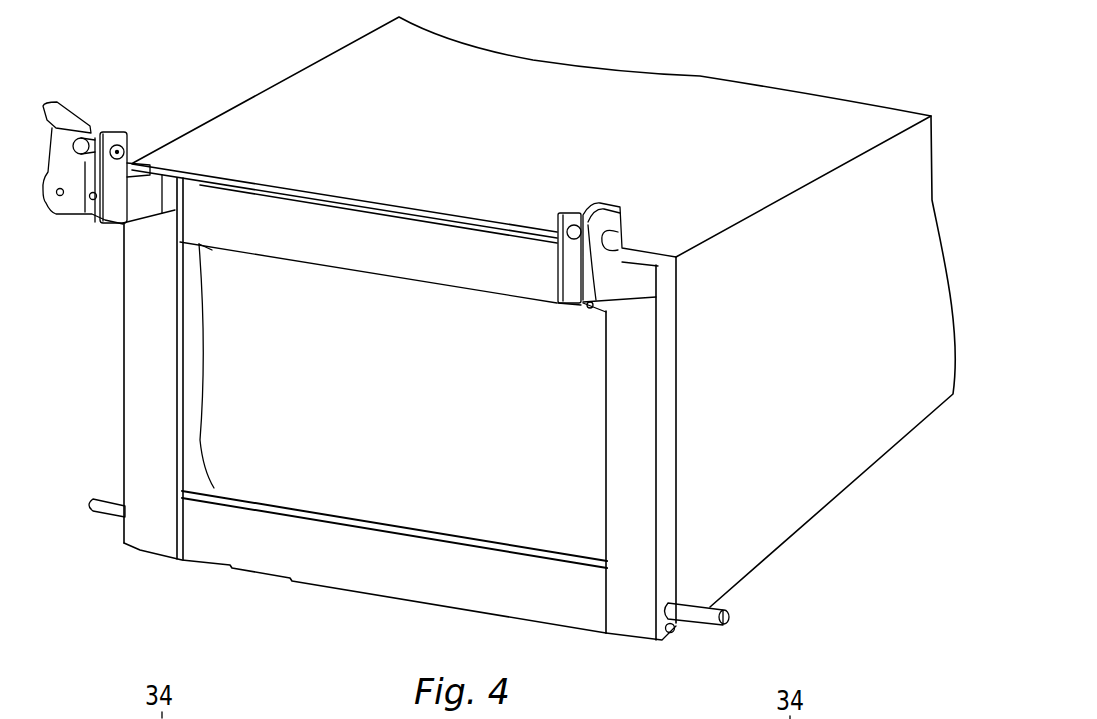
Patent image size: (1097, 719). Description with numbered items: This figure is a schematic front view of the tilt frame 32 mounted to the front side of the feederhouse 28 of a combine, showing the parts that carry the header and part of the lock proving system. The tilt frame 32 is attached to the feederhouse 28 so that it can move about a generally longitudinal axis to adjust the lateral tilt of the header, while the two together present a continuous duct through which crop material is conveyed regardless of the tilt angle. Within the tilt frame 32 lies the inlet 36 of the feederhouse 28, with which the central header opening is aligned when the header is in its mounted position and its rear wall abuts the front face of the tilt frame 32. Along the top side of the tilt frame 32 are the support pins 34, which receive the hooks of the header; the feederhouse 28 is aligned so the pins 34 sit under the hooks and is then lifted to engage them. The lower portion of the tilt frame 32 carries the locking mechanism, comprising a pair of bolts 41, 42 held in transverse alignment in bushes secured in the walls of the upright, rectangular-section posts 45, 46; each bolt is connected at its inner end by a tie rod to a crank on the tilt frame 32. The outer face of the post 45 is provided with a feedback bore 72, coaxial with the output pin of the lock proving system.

The feederhouse 28 is at (846, 457).
The tilt frame 32 is at (234, 211).
The support pins 34 is at (88, 138).
The inlet 36 is at (372, 455).
The bolt 41 is at (708, 623).
The bolt 42 is at (112, 513).
The post 45 is at (645, 614).
The post 46 is at (137, 374).
The feedback bore 72 is at (675, 638).